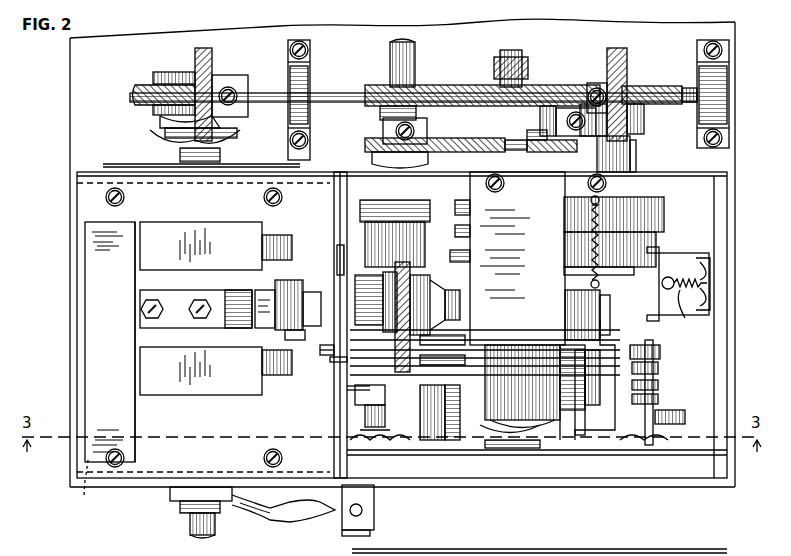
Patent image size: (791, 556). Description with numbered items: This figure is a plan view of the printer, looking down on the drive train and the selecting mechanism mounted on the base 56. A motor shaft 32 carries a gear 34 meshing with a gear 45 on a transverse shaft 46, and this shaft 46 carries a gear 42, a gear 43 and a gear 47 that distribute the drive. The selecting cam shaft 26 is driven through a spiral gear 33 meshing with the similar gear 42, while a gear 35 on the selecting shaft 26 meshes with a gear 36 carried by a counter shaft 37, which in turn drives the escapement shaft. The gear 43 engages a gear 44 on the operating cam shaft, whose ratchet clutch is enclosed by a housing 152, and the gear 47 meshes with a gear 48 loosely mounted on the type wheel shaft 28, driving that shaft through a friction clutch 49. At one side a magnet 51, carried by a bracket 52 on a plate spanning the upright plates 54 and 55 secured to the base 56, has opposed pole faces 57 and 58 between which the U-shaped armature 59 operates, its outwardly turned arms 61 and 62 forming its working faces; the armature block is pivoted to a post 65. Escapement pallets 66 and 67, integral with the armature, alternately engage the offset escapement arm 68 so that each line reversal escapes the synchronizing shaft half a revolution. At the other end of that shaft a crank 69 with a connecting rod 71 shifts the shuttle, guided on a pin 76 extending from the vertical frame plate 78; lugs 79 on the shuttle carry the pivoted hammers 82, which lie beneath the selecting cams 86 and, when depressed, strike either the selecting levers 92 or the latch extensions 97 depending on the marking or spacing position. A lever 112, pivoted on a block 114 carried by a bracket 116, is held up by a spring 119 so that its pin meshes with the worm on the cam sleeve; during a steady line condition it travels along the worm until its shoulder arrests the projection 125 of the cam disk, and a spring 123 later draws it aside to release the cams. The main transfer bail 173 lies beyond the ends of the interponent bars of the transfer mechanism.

The selecting cam shaft 26 is at (507, 258).
The type wheel shaft 28 is at (210, 530).
The motor shaft 32 is at (415, 50).
The spiral gear 33 is at (531, 86).
The gear 34 is at (428, 85).
The gear 35 is at (554, 140).
The gear 36 is at (365, 143).
The counter shaft 37 is at (412, 262).
The gear 42 is at (518, 57).
The gear 43 is at (627, 64).
The gear 44 is at (672, 86).
The gear 45 is at (416, 124).
The transverse shaft 46 is at (342, 93).
The gear 47 is at (212, 52).
The gear 48 is at (135, 97).
The friction clutch 49 is at (165, 72).
The magnet 51 is at (95, 306).
The bracket 52 is at (183, 300).
The upright plate 54 is at (87, 488).
The upright plate 55 is at (88, 201).
The base 56 is at (77, 103).
The pole face 57 is at (262, 238).
The pole face 58 is at (262, 375).
The armature 59 is at (300, 305).
The armature arm 61 is at (275, 290).
The armature arm 62 is at (292, 338).
The post 65 is at (262, 330).
The escapement pallet 66 is at (334, 252).
The escapement pallet 67 is at (334, 364).
The escapement arm 68 is at (328, 355).
The crank 69 is at (575, 308).
The connecting rod 71 is at (655, 396).
The guide pin 76 is at (655, 380).
The vertical frame plate 78 is at (590, 478).
The lug 79 is at (585, 432).
The hammer 82 is at (568, 350).
The selecting cam 86 is at (497, 345).
The selecting lever 92 is at (470, 415).
The latch extension 97 is at (460, 410).
The lever 112 is at (582, 280).
The block 114 is at (680, 262).
The bracket 116 is at (710, 268).
The spring 119 is at (686, 317).
The spring 123 is at (592, 222).
The projection 125 is at (365, 300).
The housing 152 is at (636, 148).
The main transfer bail 173 is at (365, 390).